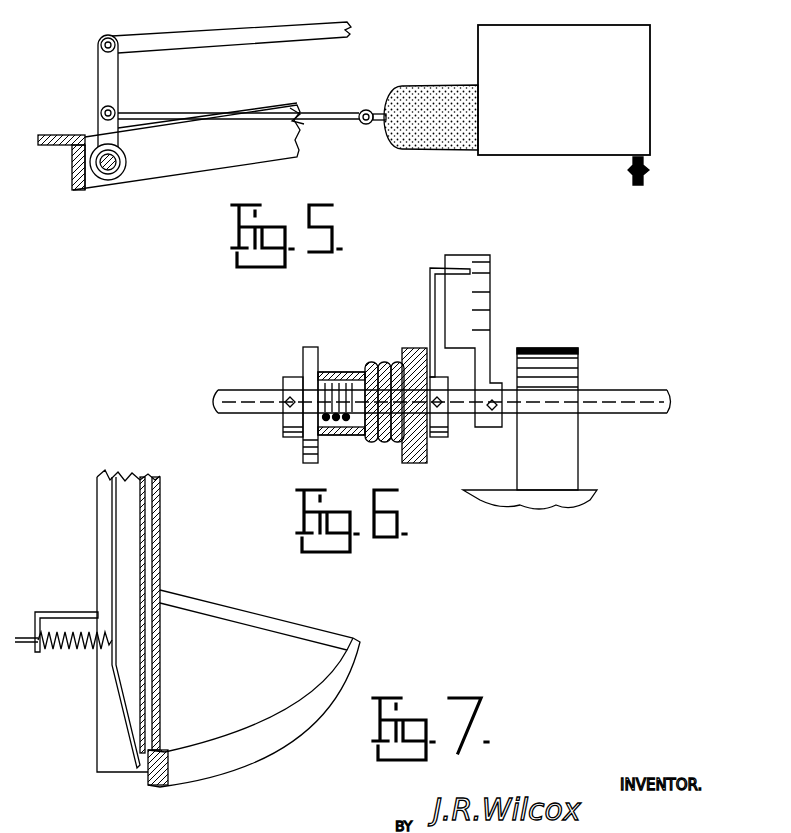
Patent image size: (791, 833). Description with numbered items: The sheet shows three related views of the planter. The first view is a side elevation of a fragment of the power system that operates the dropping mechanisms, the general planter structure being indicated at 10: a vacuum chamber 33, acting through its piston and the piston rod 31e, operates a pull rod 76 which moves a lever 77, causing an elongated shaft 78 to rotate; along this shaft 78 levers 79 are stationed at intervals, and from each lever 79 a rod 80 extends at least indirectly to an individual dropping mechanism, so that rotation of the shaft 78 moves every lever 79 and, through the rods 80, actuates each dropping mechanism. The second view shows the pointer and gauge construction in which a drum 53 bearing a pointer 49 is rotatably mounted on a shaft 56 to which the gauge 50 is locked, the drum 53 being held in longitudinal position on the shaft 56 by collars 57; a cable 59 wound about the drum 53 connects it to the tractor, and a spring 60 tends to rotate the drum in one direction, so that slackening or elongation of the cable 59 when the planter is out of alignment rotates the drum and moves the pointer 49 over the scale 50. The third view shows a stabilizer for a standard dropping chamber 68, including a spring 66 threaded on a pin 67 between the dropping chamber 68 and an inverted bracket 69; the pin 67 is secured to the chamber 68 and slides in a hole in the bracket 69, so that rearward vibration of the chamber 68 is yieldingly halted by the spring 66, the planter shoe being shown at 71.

In FIG. 5, the body member 10 is at (158, 155).
In FIG. 5, the elongated shaft 78 is at (108, 172).
In FIG. 5, the lever 77 is at (105, 130).
In FIG. 5, the lever 79 is at (107, 70).
In FIG. 5, the rod 80 is at (163, 42).
In FIG. 5, the pull rod 76 is at (338, 113).
In FIG. 5, the piston rod 31e is at (378, 125).
In FIG. 5, the vacuum chamber 33 is at (642, 46).
In FIG. 6, the shaft 56 is at (233, 412).
In FIG. 6, the collar 57 is at (285, 437).
In FIG. 6, the drum 53 is at (337, 437).
In FIG. 6, the spring 60 is at (330, 378).
In FIG. 6, the cable 59 is at (393, 360).
In FIG. 6, the pointer 49 is at (430, 268).
In FIG. 6, the gauge 50 is at (488, 303).
In FIG. 7, the dropping chamber 68 is at (143, 575).
In FIG. 7, the inverted bracket 69 is at (52, 612).
In FIG. 7, the spring 66 is at (72, 648).
In FIG. 7, the pin 67 is at (22, 645).
In FIG. 7, the quadrant 71 is at (265, 748).